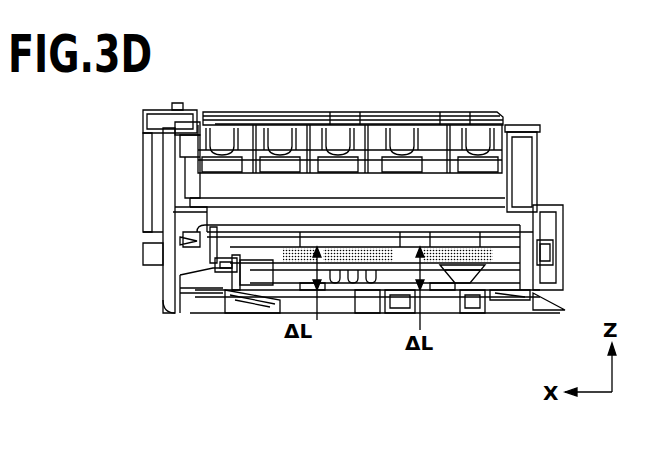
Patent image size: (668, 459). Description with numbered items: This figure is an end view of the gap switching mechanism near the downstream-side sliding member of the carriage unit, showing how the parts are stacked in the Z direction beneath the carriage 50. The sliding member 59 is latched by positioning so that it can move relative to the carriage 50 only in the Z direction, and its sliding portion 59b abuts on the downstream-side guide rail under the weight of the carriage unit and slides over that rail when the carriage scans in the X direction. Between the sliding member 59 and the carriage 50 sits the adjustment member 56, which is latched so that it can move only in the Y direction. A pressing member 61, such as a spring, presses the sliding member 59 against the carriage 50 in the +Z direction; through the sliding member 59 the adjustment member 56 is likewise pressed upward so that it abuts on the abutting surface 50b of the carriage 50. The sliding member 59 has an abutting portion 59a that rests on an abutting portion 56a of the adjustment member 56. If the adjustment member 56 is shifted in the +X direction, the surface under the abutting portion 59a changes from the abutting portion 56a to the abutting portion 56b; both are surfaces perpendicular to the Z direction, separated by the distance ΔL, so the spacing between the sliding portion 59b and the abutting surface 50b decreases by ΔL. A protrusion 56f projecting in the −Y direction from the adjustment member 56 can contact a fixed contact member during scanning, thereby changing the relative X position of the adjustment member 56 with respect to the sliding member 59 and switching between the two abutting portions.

The carriage 50 is at (283, 210).
The abutting surface 50b is at (441, 250).
The adjustment member 56 is at (407, 208).
The abutting portion 56a is at (465, 300).
The abutting portion 56b is at (400, 300).
The protrusion 56f is at (487, 298).
The sliding member 59 is at (447, 285).
The abutting portion 59a is at (447, 300).
The sliding portion 59b is at (343, 300).
The pressing member 61 is at (560, 252).